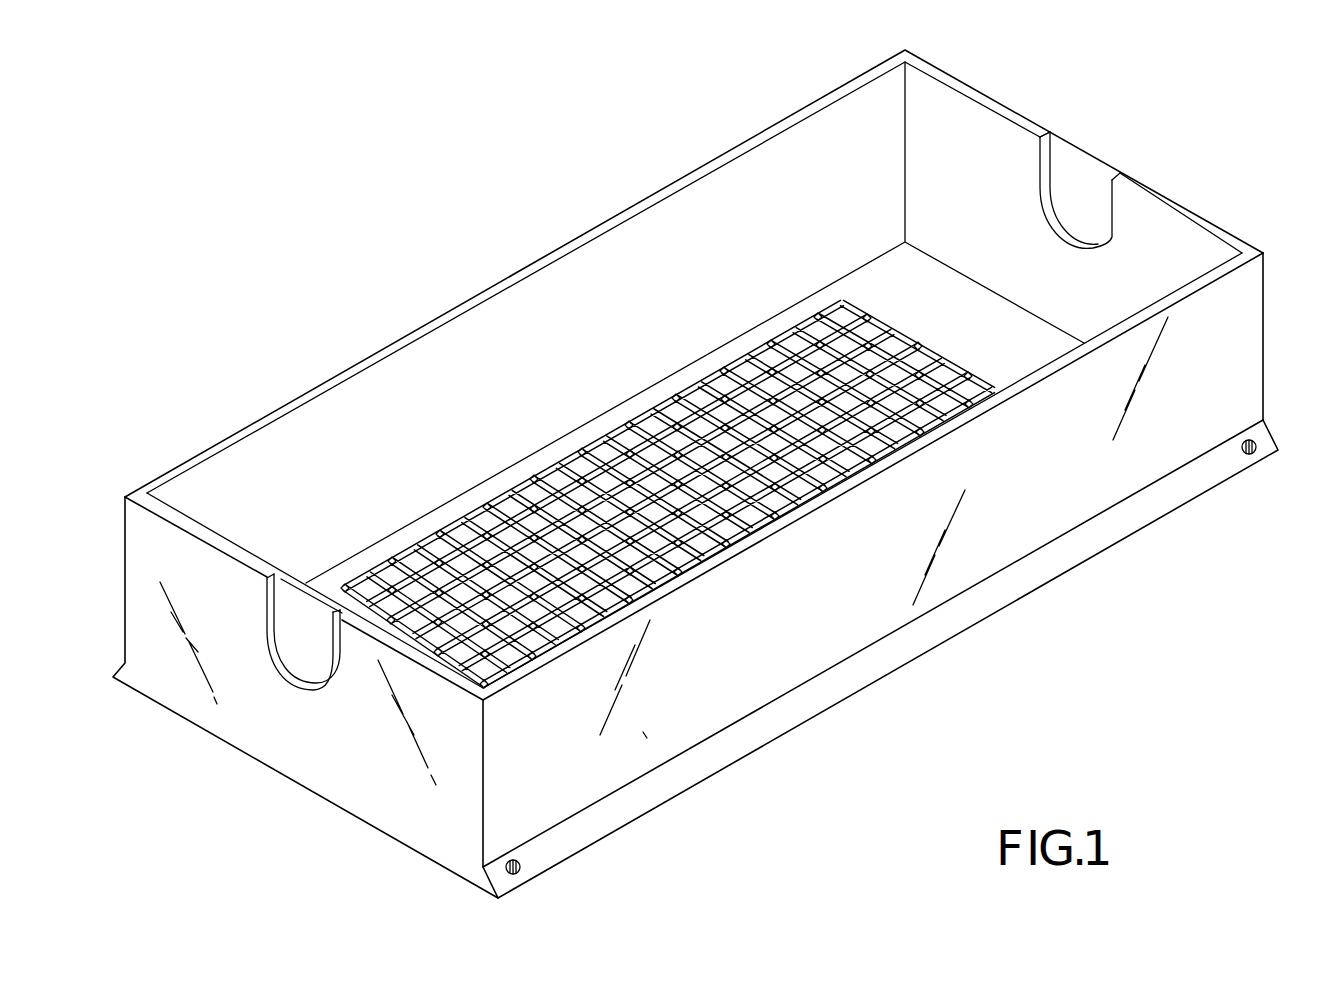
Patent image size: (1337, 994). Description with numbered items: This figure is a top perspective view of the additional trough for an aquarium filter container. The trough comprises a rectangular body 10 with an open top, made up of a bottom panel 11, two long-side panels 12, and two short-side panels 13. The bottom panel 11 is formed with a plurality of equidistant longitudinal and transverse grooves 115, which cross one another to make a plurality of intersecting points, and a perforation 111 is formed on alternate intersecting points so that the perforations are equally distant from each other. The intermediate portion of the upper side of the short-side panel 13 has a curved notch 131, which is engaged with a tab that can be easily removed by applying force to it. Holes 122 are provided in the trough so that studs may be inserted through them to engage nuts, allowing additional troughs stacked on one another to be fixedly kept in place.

The rectangular body 10 is at (250, 773).
The bottom panel 11 is at (668, 383).
The perforation 111 is at (580, 450).
The grooves 115 is at (478, 520).
The long-side panel 12 is at (375, 395).
The short-side panel 13 is at (1158, 161).
The curved notch 131 is at (1053, 158).
The hole 122 is at (1255, 457).